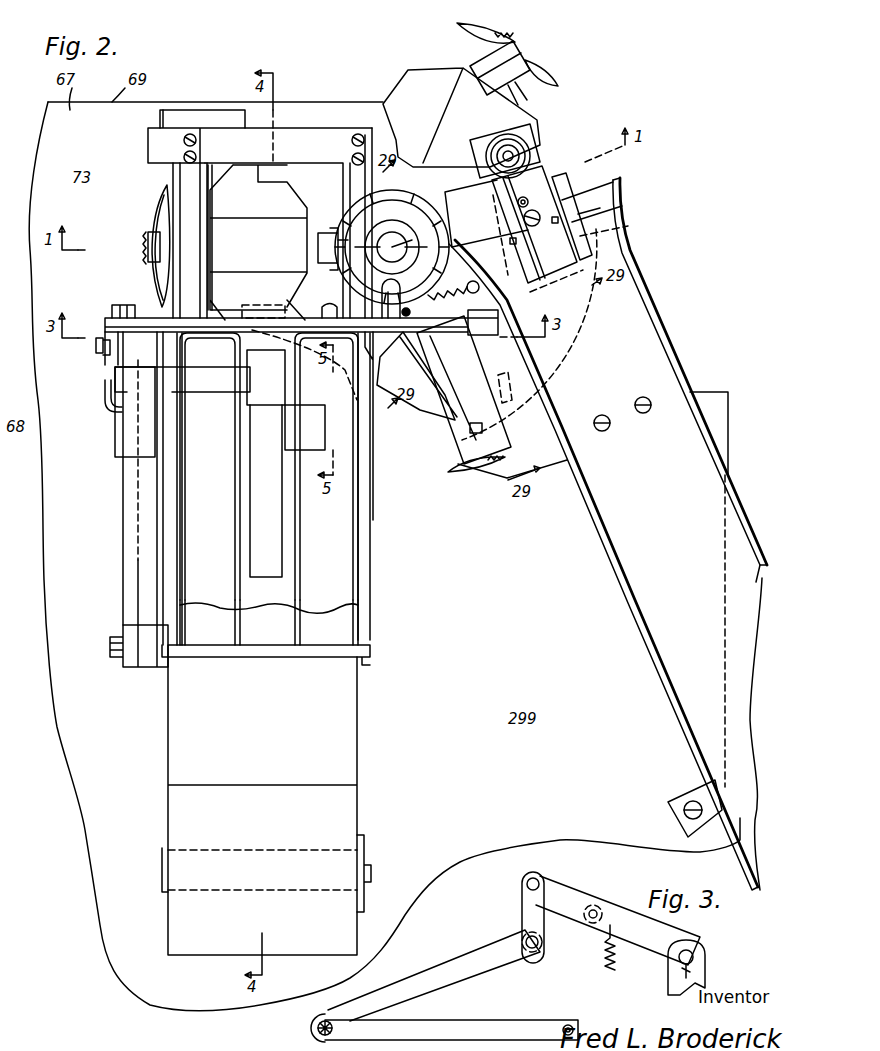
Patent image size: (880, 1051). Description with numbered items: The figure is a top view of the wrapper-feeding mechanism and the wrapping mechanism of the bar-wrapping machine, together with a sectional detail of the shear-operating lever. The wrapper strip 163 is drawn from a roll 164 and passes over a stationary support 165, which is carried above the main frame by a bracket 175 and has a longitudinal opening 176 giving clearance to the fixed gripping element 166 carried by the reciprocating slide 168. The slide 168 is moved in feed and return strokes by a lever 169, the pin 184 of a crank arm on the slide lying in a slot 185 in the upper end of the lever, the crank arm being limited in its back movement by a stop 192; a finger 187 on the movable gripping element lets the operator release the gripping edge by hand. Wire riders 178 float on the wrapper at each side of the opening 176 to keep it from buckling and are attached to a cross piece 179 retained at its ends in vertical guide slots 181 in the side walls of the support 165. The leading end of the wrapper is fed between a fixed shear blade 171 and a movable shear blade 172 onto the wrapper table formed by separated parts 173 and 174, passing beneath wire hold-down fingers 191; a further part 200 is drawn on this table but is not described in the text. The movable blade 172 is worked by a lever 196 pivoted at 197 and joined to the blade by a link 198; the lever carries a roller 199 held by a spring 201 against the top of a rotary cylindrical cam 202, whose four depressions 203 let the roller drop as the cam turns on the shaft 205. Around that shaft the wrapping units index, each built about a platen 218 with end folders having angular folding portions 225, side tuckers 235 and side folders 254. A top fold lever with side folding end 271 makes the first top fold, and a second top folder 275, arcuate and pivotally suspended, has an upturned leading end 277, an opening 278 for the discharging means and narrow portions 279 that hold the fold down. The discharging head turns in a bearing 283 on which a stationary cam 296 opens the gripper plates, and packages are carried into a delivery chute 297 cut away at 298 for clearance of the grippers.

In FIG. 2, the wrapper strip 163 is at (350, 718).
In FIG. 2, the roll 164 is at (345, 810).
In FIG. 2, the stationary support 165 is at (195, 528).
In FIG. 2, the fixed gripping element 166 is at (255, 407).
In FIG. 2, the slide 168 is at (140, 448).
In FIG. 2, the lever 169 is at (105, 400).
In FIG. 2, the fixed shear blade 171 is at (165, 330).
In FIG. 3, the fixed shear blade 171 is at (505, 1018).
In FIG. 2, the movable shear blade 172 is at (180, 325).
In FIG. 3, the movable shear blade 172 is at (490, 963).
In FIG. 2, the wrapper table part 173 is at (192, 232).
In FIG. 2, the wrapper table part 174 is at (350, 200).
In FIG. 2, the bracket 175 is at (185, 115).
In FIG. 2, the longitudinal opening 176 is at (250, 508).
In FIG. 2, the wire riders 178 is at (235, 553).
In FIG. 2, the cross piece 179 is at (306, 655).
In FIG. 2, the vertical guide slots 181 is at (162, 668).
In FIG. 2, the pin 184 is at (115, 375).
In FIG. 2, the slot 185 is at (103, 345).
In FIG. 2, the finger 187 is at (305, 427).
In FIG. 2, the wire hold-down fingers 191 is at (208, 207).
In FIG. 2, the stop 192 is at (112, 420).
In FIG. 2, the lever 196 is at (410, 340).
In FIG. 3, the lever 196 is at (575, 890).
In FIG. 3, the pivot 197 is at (695, 952).
In FIG. 3, the link 198 is at (530, 913).
In FIG. 2, the roller 199 is at (388, 290).
In FIG. 3, the roller 199 is at (605, 905).
In FIG. 2, the lugs 200 is at (280, 180).
In FIG. 2, the spring 201 is at (440, 295).
In FIG. 3, the spring 201 is at (600, 950).
In FIG. 2, the rotary cylindrical cam 202 is at (346, 218).
In FIG. 2, the depressions 203 is at (392, 247).
In FIG. 2, the shaft 205 is at (400, 252).
In FIG. 2, the platen 218 is at (274, 242).
In FIG. 2, the angular folding portions 225 is at (515, 55).
In FIG. 2, the side tuckers 235 is at (458, 42).
In FIG. 2, the side folders 254 is at (461, 117).
In FIG. 2, the side folding end 271 is at (455, 425).
In FIG. 2, the second top folder 275 is at (578, 330).
In FIG. 2, the leading end 277 is at (520, 378).
In FIG. 2, the opening 278 is at (628, 230).
In FIG. 2, the narrow portions 279 is at (485, 180).
In FIG. 2, the bearing 283 is at (522, 213).
In FIG. 2, the stationary cam 296 is at (514, 285).
In FIG. 2, the delivery chute 297 is at (616, 188).
In FIG. 2, the cut-away 298 is at (622, 210).